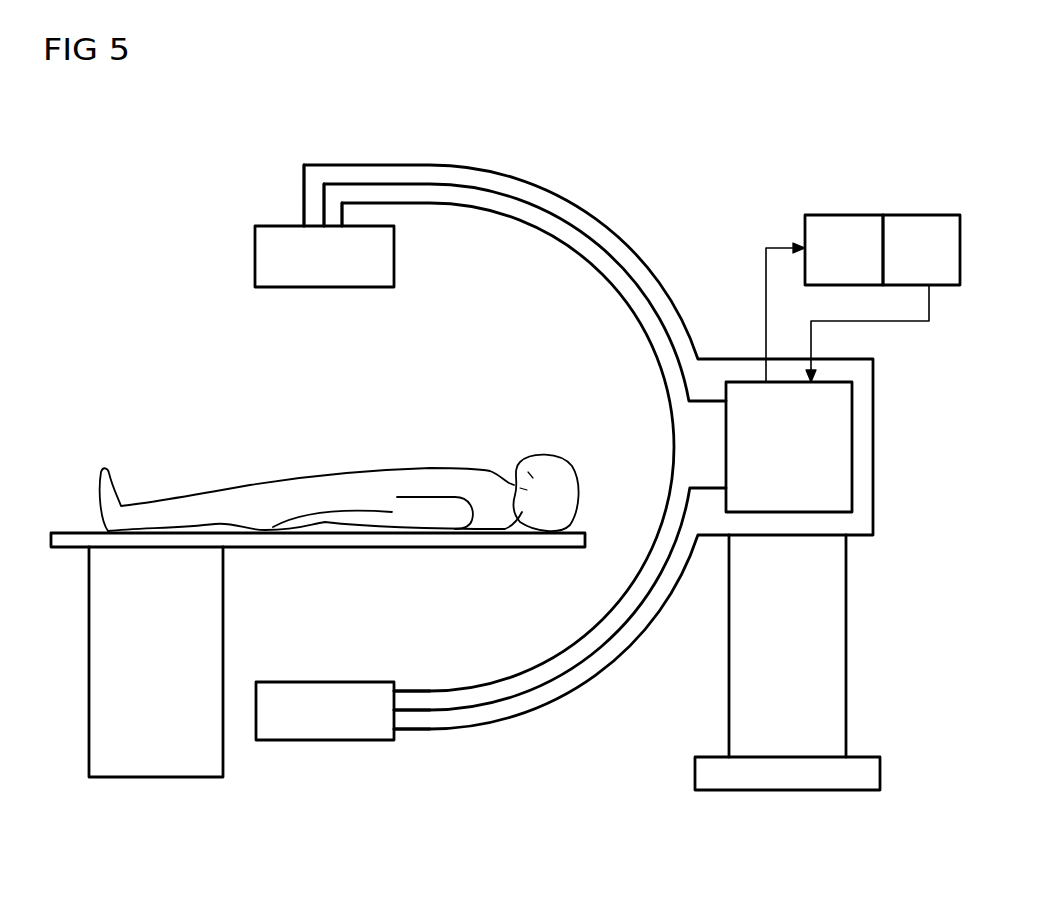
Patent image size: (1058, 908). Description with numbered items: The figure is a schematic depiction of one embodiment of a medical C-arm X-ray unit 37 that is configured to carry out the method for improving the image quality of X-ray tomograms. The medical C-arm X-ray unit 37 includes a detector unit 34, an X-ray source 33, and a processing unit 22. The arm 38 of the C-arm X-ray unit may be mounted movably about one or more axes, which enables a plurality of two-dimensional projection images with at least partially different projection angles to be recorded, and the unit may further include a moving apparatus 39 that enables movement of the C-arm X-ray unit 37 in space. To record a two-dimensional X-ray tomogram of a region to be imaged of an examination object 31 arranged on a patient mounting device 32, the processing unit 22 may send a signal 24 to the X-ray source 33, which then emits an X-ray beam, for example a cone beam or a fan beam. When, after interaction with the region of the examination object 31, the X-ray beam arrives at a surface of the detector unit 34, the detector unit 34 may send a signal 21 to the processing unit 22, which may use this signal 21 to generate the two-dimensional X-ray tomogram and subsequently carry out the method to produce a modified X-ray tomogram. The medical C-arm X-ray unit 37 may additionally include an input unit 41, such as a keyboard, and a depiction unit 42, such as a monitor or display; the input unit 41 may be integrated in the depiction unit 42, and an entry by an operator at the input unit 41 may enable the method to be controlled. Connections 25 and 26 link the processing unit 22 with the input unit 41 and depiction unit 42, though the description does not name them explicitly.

The signal 21 is at (409, 184).
The processing unit 22 is at (852, 450).
The signal 24 is at (430, 712).
The data connection 25 is at (773, 248).
The control connection 26 is at (914, 322).
The examination object 31 is at (420, 467).
The patient mounting device 32 is at (135, 807).
The X-ray source 33 is at (323, 740).
The detector unit 34 is at (289, 226).
The medical C-arm X-ray unit 37 is at (597, 132).
The arm 38 is at (328, 165).
The moving apparatus 39 is at (787, 790).
The input unit 41 is at (845, 215).
The depiction unit 42 is at (920, 215).